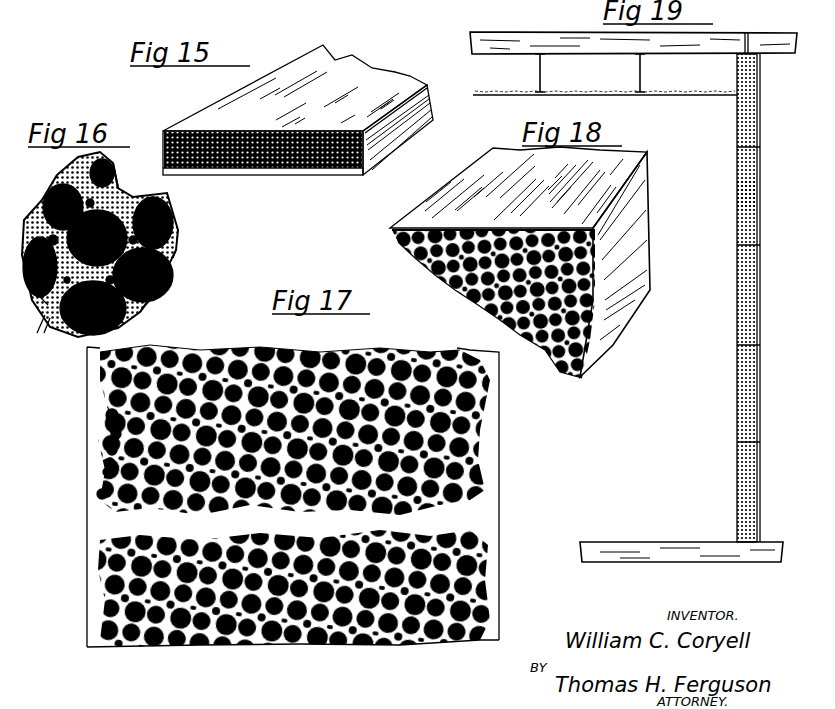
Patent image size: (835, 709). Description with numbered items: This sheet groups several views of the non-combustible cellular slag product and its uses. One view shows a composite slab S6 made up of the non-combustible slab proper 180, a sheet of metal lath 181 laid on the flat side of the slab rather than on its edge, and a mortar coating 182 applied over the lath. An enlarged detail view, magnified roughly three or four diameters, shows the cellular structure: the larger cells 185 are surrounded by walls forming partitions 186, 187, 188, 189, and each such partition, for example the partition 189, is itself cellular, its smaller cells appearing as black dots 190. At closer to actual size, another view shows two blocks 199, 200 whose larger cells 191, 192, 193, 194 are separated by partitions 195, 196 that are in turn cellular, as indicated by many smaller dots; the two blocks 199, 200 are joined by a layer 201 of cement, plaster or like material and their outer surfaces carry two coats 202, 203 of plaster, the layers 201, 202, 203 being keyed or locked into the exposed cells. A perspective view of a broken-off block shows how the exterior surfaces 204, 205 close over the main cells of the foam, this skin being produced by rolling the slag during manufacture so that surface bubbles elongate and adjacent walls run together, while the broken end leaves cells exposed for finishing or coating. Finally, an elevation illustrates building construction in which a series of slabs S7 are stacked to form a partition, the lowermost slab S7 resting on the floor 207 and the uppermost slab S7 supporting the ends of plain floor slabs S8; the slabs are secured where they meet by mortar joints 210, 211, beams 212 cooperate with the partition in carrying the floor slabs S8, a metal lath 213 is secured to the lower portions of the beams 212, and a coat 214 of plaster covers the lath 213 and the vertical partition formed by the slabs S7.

In FIG. 15, the non-combustible slab proper 180 is at (395, 157).
In FIG. 15, the sheet of metal lath 181 is at (248, 170).
In FIG. 15, the mortar coating 182 is at (433, 132).
In FIG. 16, the larger cells 185 is at (50, 206).
In FIG. 16, the partition 186 is at (148, 303).
In FIG. 16, the partition 187 is at (177, 255).
In FIG. 16, the partition 188 is at (120, 192).
In FIG. 16, the partition 189 is at (45, 300).
In FIG. 16, the black dots 190 is at (37, 336).
In FIG. 17, the larger cell 191 is at (110, 415).
In FIG. 17, the larger cell 192 is at (110, 450).
In FIG. 17, the larger cell 193 is at (105, 472).
In FIG. 17, the larger cell 194 is at (100, 494).
In FIG. 17, the partition 195 is at (115, 434).
In FIG. 17, the partition 196 is at (108, 462).
In FIG. 17, the block 199 is at (365, 350).
In FIG. 17, the block 200 is at (315, 636).
In FIG. 17, the layer of cement 201 is at (440, 514).
In FIG. 17, the coat of plaster 202 is at (87, 568).
In FIG. 17, the coat of plaster 203 is at (492, 430).
In FIG. 18, the exterior surface 204 is at (613, 335).
In FIG. 18, the exterior surface 205 is at (633, 153).
In FIG. 19, the floor 207 is at (598, 542).
In FIG. 19, the mortar joint 210 is at (737, 148).
In FIG. 19, the mortar joint 211 is at (745, 36).
In FIG. 19, the beam 212 is at (542, 72).
In FIG. 19, the metal lath 213 is at (500, 92).
In FIG. 19, the coat of plaster 214 is at (737, 197).
In FIG. 15, the non-combustible composite slab S6 is at (340, 50).
In FIG. 19, the slab S7 is at (722, 494).
In FIG. 19, the plain floor slab S8 is at (510, 32).